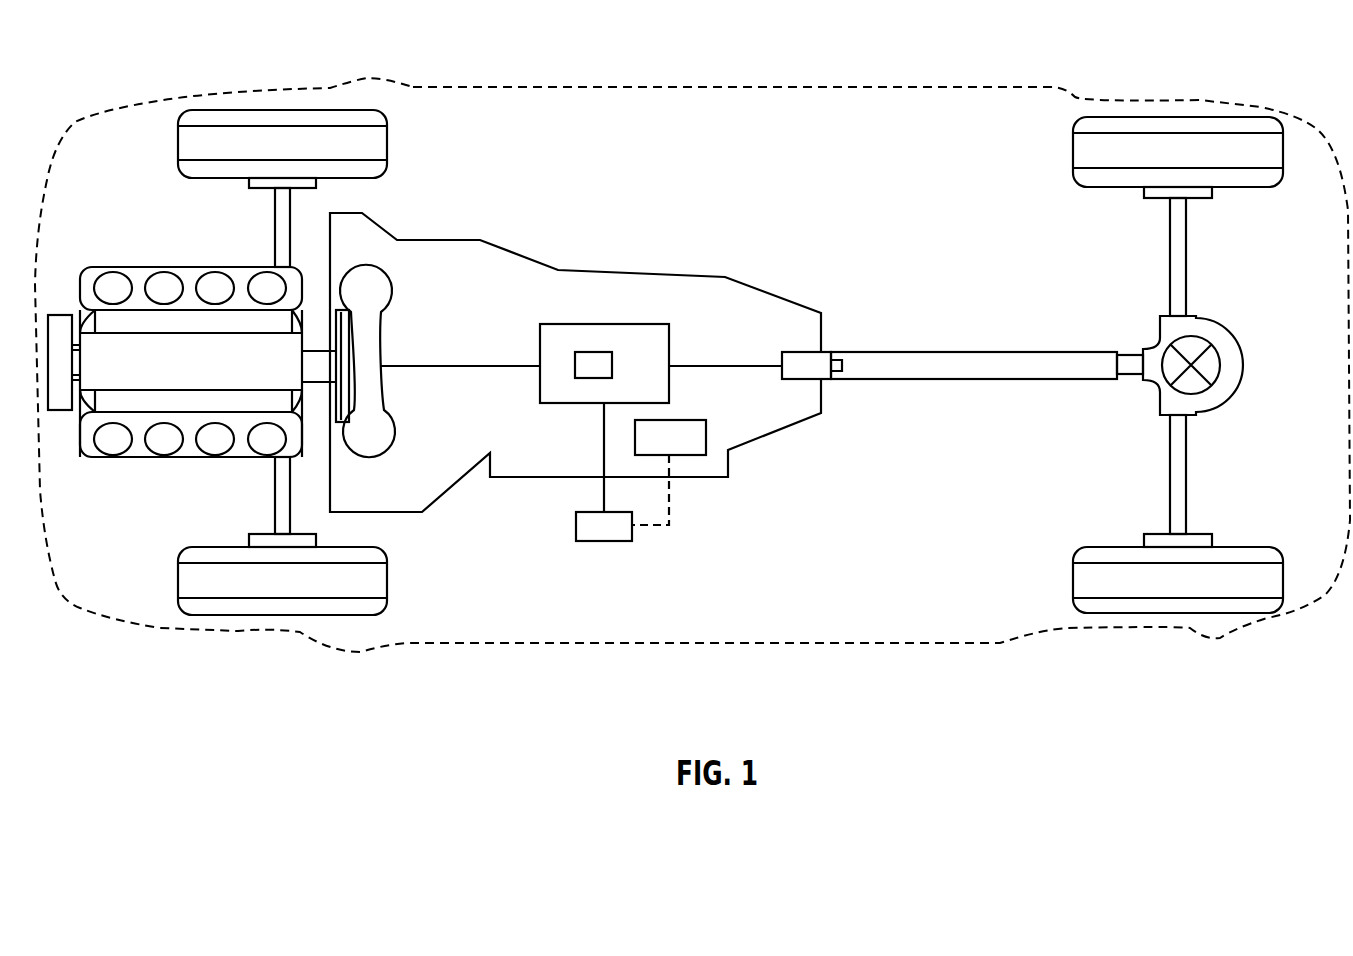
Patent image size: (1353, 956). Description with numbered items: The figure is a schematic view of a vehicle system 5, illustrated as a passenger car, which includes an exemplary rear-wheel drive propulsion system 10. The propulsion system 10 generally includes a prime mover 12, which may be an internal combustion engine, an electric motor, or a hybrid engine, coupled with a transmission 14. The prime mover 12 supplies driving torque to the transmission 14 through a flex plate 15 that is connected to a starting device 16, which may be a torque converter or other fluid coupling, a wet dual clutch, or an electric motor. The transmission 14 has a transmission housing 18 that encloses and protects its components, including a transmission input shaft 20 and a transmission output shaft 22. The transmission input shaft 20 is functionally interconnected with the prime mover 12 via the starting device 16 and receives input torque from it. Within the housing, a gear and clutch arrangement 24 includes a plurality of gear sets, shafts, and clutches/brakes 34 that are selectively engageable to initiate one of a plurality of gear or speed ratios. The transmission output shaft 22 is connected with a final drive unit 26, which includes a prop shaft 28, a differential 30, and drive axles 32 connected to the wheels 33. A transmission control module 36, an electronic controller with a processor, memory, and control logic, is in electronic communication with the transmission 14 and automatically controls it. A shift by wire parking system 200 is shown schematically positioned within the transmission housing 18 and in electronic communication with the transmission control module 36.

The vehicle system 5 is at (613, 86).
The propulsion system 10 is at (715, 176).
The prime mover 12 is at (176, 375).
The transmission 14 is at (580, 362).
The flex plate 15 is at (334, 333).
The starting device 16 is at (383, 270).
The transmission housing 18 is at (766, 300).
The transmission input shaft 20 is at (444, 366).
The transmission output shaft 22 is at (720, 365).
The gear and clutch arrangement 24 is at (563, 324).
The final drive unit 26 is at (1068, 365).
The prop shaft 28 is at (894, 351).
The differential 30 is at (1238, 364).
The drive axles 32 is at (1188, 294).
The wheels 33 is at (1245, 188).
The clutches/brakes 34 is at (590, 380).
The transmission control module 36 is at (602, 542).
The shift by wire parking system 200 is at (705, 437).